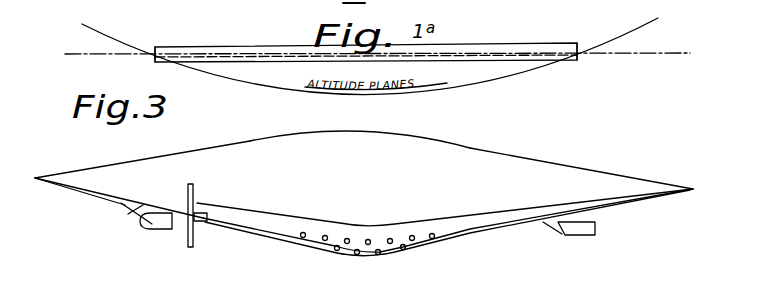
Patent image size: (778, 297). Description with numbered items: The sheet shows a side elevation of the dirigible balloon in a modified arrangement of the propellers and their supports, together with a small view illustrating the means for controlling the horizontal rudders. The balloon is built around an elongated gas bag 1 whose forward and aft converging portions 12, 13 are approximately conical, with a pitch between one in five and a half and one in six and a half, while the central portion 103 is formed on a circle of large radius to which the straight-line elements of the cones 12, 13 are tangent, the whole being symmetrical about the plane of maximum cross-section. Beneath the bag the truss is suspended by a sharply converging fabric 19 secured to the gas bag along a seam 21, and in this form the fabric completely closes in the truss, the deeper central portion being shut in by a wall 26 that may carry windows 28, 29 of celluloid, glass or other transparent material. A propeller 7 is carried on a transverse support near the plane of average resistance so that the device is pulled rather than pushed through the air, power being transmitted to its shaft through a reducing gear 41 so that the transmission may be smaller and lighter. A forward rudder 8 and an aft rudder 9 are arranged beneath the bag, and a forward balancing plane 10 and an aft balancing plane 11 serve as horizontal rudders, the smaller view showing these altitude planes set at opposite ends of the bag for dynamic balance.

In FIG. 3, the gas bag 1 is at (202, 190).
In FIG. 3, the propeller 7 is at (196, 186).
In FIG. 3, the forward rudder 8 is at (163, 229).
In FIG. 3, the aft rudder 9 is at (590, 236).
In FIG. 1A, the forward balancing plane 10 is at (153, 57).
In FIG. 3, the forward balancing plane 10 is at (131, 210).
In FIG. 1A, the aft balancing plane 11 is at (578, 55).
In FIG. 3, the aft balancing plane 11 is at (580, 218).
In FIG. 3, the forward converging portion 12 is at (182, 153).
In FIG. 3, the aft converging portion 13 is at (529, 158).
In FIG. 3, the converging fabric 19 is at (377, 221).
In FIG. 3, the seam 21 is at (244, 208).
In FIG. 3, the wall 26 is at (327, 250).
In FIG. 3, the window 28 is at (345, 239).
In FIG. 3, the window 29 is at (376, 254).
In FIG. 3, the reducing gear 41 is at (203, 223).
In FIG. 3, the central portion 103 is at (364, 129).